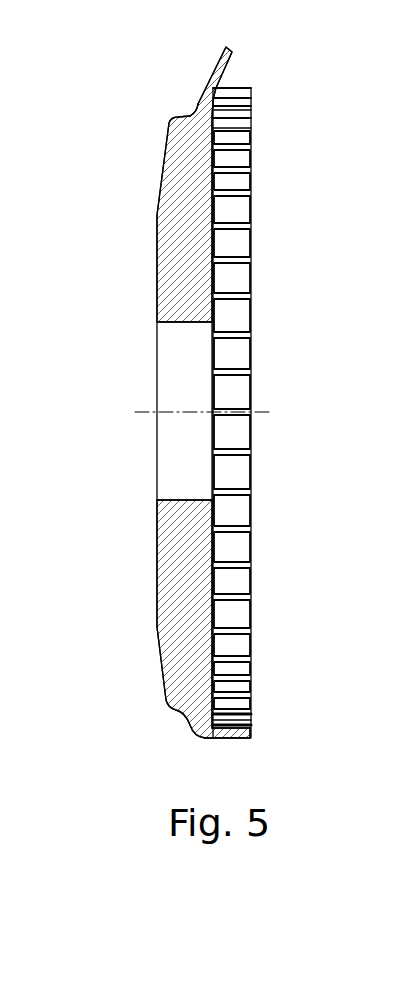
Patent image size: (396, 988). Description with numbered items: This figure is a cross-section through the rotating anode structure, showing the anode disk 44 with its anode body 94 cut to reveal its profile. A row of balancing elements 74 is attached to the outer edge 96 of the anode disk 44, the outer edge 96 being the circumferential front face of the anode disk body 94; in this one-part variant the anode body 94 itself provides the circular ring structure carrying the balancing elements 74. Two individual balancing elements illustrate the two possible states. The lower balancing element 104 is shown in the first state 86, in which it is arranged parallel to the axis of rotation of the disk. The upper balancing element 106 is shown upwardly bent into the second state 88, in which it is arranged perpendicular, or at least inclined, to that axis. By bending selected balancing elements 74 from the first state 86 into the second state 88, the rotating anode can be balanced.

The anode disk 44 is at (140, 177).
The balancing elements 74 is at (268, 523).
The first state 86 is at (261, 710).
The second state 88 is at (214, 49).
The anode body 94 is at (158, 222).
The outer edge 96 is at (192, 110).
The lower balancing element 104 is at (253, 732).
The upper balancing element 106 is at (232, 58).